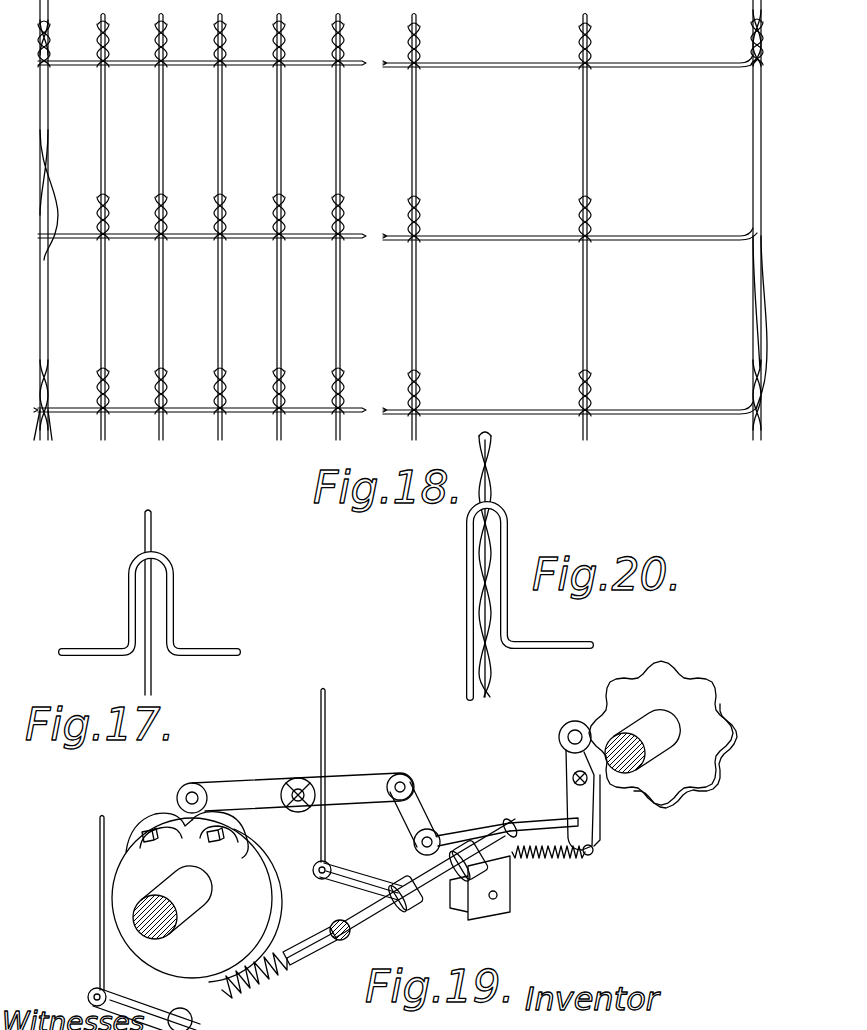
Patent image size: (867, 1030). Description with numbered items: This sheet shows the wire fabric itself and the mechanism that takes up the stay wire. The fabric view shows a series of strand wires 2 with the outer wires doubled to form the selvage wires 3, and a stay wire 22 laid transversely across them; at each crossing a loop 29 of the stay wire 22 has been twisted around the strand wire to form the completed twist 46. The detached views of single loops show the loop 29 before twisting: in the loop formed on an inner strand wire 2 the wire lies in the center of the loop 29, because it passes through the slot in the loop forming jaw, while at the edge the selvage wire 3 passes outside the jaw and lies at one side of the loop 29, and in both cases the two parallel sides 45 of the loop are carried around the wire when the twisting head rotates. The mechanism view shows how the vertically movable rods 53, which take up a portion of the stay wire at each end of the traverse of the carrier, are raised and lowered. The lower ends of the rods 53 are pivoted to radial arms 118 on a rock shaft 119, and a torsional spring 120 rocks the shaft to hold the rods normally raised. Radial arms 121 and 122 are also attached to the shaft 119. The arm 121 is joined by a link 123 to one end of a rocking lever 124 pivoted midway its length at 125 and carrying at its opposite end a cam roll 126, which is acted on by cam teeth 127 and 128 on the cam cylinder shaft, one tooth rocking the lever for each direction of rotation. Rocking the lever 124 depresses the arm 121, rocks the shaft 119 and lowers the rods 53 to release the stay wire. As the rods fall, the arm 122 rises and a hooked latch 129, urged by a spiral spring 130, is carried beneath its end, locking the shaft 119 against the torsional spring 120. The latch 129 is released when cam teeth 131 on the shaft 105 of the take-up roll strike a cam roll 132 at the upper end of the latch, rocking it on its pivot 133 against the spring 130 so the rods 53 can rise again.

In FIG. 18, the strand wire 2 is at (163, 318).
In FIG. 17, the strand wire 2 is at (141, 526).
In FIG. 18, the selvage wire 3 is at (49, 321).
In FIG. 20, the selvage wire 3 is at (494, 484).
In FIG. 18, the stay wire 22 is at (124, 233).
In FIG. 17, the stay wire 22 is at (146, 594).
In FIG. 20, the stay wire 22 is at (504, 597).
In FIG. 17, the loop 29 is at (160, 565).
In FIG. 20, the loop 29 is at (510, 520).
In FIG. 17, the parallel sides of the loop 45 is at (128, 606).
In FIG. 20, the parallel sides of the loop 45 is at (467, 592).
In FIG. 18, the twisted loop 46 is at (343, 222).
In FIG. 19, the rod 53 is at (99, 838).
In FIG. 19, the shaft of the take-up roll 105 is at (652, 772).
In FIG. 19, the radial arm 118 is at (150, 995).
In FIG. 19, the rock shaft 119 is at (305, 950).
In FIG. 19, the torsional spring 120 is at (290, 985).
In FIG. 19, the radial arm 121 is at (480, 826).
In FIG. 19, the radial arm 122 is at (541, 824).
In FIG. 19, the link 123 is at (422, 818).
In FIG. 19, the rocking lever 124 is at (358, 778).
In FIG. 19, the pivot 125 is at (296, 778).
In FIG. 19, the cam roll 126 is at (192, 784).
In FIG. 19, the cam tooth 127 is at (246, 832).
In FIG. 19, the cam tooth 128 is at (142, 814).
In FIG. 19, the hooked latch 129 is at (596, 840).
In FIG. 19, the spiral spring 130 is at (562, 860).
In FIG. 19, the cam teeth 131 is at (688, 685).
In FIG. 19, the cam roll 132 is at (569, 726).
In FIG. 19, the pivot 133 is at (574, 777).